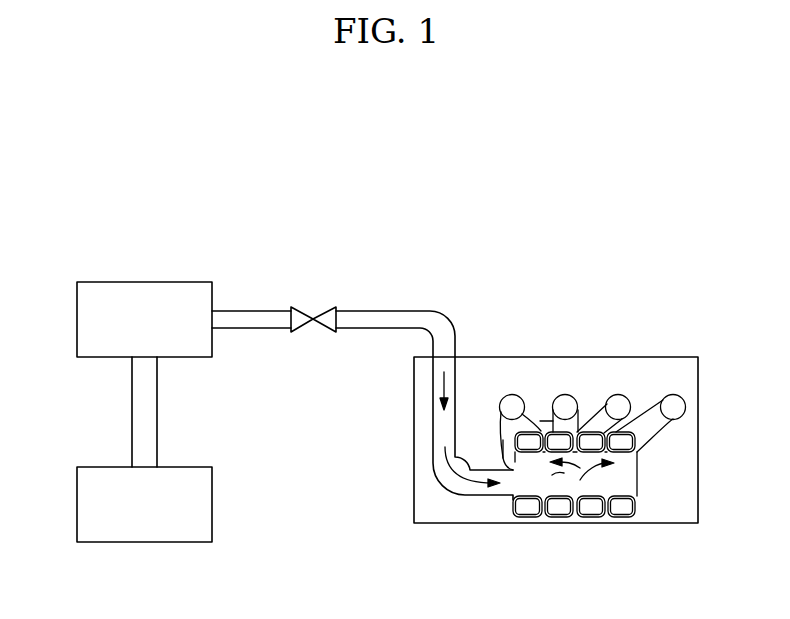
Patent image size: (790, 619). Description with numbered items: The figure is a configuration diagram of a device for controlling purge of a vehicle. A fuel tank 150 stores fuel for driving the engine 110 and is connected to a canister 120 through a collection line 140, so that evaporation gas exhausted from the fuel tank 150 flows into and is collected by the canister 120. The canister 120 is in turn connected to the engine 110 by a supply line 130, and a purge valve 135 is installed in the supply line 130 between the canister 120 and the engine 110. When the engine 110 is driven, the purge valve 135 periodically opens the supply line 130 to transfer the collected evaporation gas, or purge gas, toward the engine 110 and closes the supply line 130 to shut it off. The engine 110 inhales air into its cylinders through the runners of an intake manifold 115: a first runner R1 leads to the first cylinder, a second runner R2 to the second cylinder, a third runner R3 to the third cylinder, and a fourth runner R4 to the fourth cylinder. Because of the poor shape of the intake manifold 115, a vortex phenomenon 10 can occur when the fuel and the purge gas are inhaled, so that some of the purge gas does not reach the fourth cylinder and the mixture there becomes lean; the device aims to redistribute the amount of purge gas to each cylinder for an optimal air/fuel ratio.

The vortex phenomenon 10 is at (552, 475).
The engine 110 is at (581, 523).
The intake manifold 115 is at (627, 480).
The canister 120 is at (77, 320).
The supply line 130 is at (262, 311).
The purge valve 135 is at (330, 332).
The collection line 140 is at (132, 412).
The fuel tank 150 is at (77, 505).
The first runner R1 is at (651, 410).
The second runner R2 is at (604, 400).
The third runner R3 is at (566, 400).
The fourth runner R4 is at (527, 413).